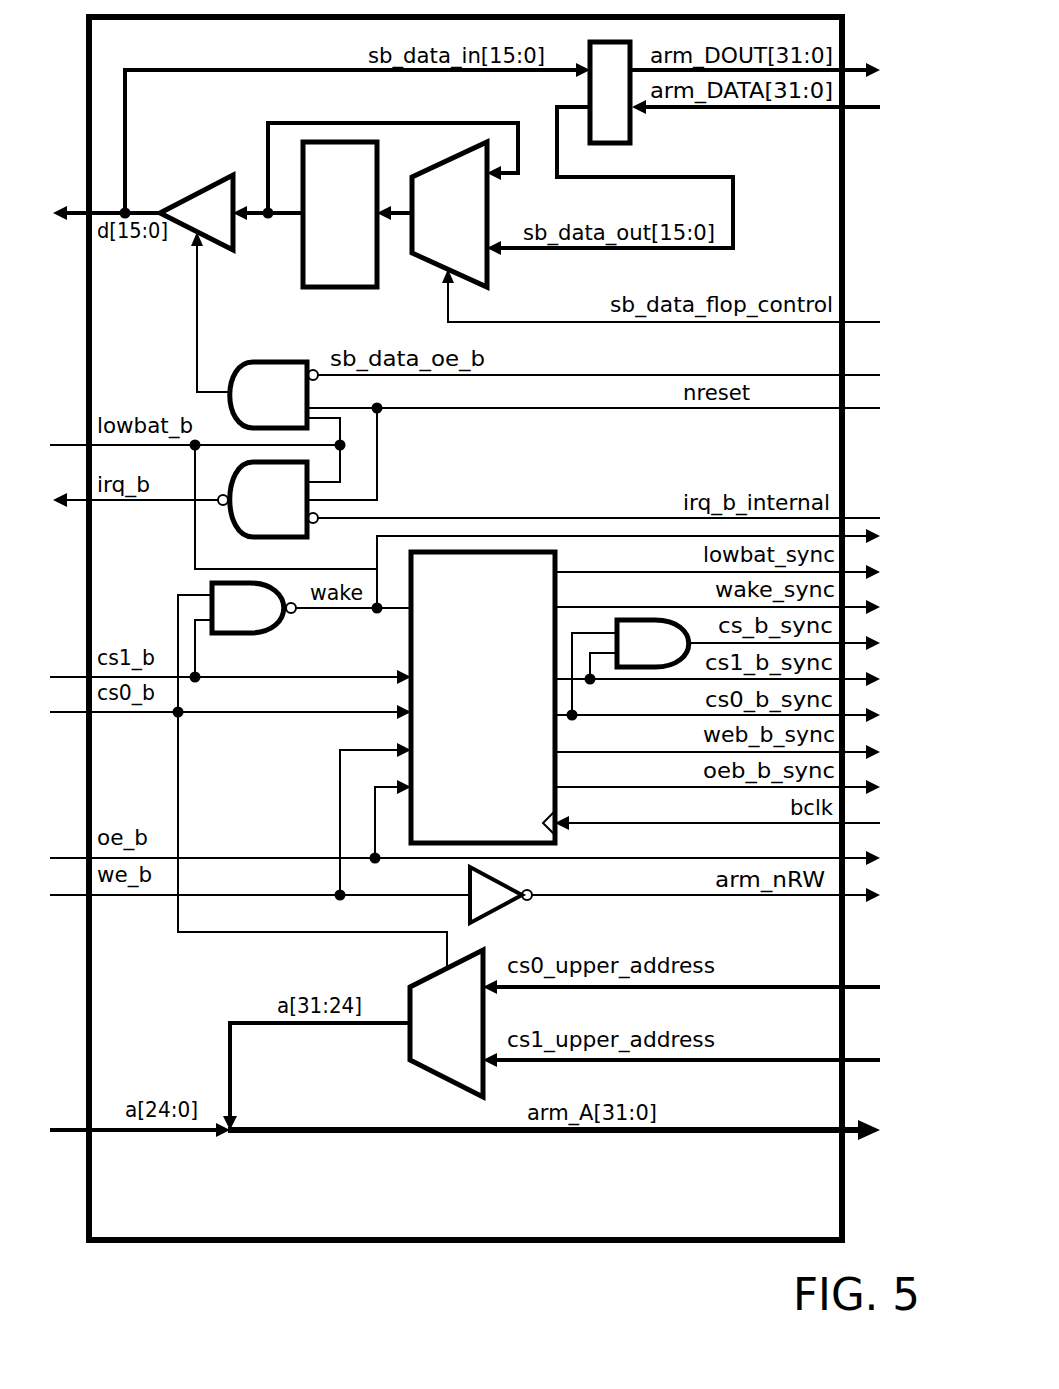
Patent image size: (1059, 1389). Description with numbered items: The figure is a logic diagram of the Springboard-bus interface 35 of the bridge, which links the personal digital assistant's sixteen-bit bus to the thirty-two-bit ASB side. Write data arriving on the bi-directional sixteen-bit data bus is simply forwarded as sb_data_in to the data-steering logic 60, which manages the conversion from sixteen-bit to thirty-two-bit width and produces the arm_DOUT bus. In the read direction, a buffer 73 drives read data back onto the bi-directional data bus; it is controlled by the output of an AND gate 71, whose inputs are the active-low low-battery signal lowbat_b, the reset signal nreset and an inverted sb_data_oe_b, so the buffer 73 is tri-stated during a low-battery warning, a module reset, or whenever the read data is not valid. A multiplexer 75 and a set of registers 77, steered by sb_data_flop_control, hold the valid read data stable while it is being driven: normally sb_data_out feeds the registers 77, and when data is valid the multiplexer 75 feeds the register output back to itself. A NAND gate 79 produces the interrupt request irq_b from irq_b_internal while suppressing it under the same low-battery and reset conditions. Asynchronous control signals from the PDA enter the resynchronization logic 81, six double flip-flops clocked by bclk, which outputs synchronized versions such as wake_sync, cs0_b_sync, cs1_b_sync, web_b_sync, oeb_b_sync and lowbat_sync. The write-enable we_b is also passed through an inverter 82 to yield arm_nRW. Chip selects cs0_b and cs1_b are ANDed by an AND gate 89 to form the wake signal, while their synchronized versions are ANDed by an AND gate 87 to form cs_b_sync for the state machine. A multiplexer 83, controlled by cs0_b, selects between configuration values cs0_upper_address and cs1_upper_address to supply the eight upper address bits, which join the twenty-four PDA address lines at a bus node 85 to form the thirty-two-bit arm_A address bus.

The Springboard-bus interface 35 is at (787, 1232).
The data-steering logic 60 is at (630, 133).
The AND gate 71 is at (255, 407).
The buffer 73 is at (223, 222).
The multiplexer 75 is at (433, 243).
The set of registers 77 is at (327, 243).
The NAND gate 79 is at (268, 499).
The resynchronization logic 81 is at (470, 737).
The inverter 82 is at (498, 910).
The multiplexer 83 is at (434, 1052).
The bus node 85 is at (232, 1135).
The AND gate 87 is at (629, 655).
The AND gate 89 is at (235, 620).